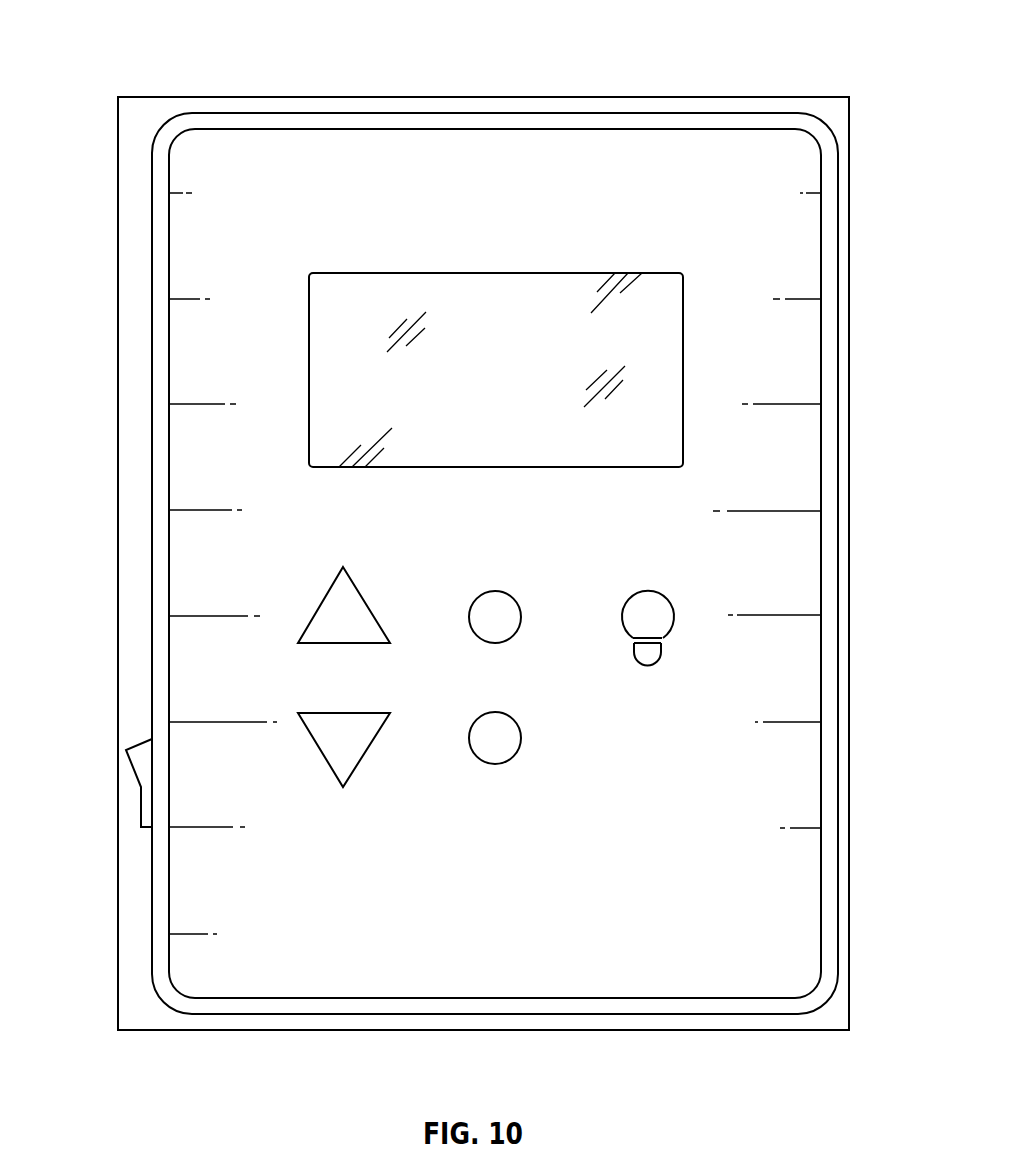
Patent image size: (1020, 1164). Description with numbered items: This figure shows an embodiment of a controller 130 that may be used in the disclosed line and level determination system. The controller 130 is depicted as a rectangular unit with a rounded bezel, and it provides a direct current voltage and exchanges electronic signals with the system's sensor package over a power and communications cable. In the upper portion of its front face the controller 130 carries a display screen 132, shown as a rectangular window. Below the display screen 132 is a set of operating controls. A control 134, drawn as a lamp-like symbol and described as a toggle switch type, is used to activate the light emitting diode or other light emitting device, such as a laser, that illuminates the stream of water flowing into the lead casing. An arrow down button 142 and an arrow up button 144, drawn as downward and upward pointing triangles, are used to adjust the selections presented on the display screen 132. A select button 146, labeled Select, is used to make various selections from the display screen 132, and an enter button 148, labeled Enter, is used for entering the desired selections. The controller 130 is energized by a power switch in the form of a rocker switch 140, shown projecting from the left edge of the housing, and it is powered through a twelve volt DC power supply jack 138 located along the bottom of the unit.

The controller 130 is at (482, 86).
The display screen 132 is at (666, 387).
The control 134 is at (674, 617).
The power supply jack 138 is at (387, 1014).
The rocker switch 140 is at (140, 808).
The arrow down button 142 is at (320, 753).
The arrow up button 144 is at (327, 592).
The select button 146 is at (496, 591).
The enter button 148 is at (521, 737).